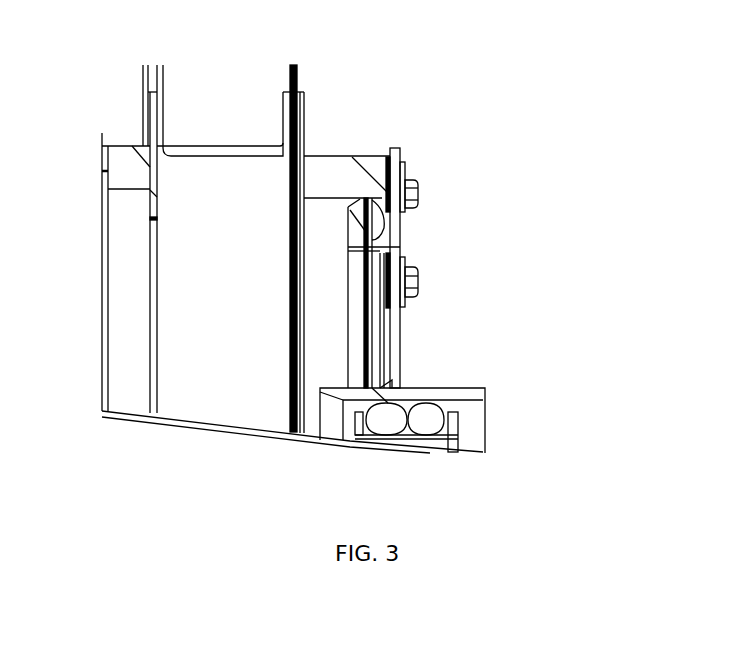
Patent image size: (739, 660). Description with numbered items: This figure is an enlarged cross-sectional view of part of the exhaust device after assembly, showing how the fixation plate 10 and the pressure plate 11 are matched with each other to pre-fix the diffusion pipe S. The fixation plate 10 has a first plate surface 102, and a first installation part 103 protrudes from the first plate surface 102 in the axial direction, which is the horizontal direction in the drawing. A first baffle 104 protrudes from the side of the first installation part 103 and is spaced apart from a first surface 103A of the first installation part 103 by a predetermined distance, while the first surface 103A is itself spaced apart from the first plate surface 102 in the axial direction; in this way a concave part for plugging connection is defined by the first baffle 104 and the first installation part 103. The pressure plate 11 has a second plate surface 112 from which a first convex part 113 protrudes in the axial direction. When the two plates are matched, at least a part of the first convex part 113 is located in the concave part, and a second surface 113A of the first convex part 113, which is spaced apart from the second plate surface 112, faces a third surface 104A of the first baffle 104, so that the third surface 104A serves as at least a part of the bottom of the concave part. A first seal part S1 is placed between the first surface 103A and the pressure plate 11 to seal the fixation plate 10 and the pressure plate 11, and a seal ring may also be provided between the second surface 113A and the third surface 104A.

The fixation plate 10 is at (313, 140).
The first plate surface 102 is at (297, 108).
The first installation part 103 is at (346, 178).
The first surface 103A is at (398, 183).
The first baffle 104 is at (352, 208).
The third surface 104A is at (374, 237).
The pressure plate 11 is at (408, 160).
The second plate surface 112 is at (395, 232).
The first convex part 113 is at (380, 250).
The second surface 113A is at (402, 262).
The diffusion pipe S is at (280, 433).
The first seal part S1 is at (433, 411).